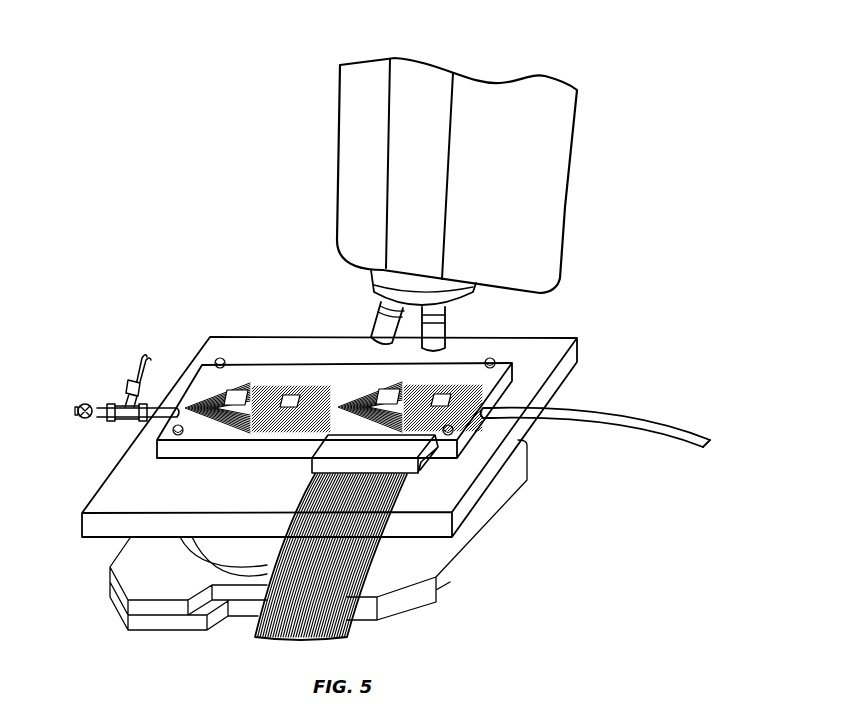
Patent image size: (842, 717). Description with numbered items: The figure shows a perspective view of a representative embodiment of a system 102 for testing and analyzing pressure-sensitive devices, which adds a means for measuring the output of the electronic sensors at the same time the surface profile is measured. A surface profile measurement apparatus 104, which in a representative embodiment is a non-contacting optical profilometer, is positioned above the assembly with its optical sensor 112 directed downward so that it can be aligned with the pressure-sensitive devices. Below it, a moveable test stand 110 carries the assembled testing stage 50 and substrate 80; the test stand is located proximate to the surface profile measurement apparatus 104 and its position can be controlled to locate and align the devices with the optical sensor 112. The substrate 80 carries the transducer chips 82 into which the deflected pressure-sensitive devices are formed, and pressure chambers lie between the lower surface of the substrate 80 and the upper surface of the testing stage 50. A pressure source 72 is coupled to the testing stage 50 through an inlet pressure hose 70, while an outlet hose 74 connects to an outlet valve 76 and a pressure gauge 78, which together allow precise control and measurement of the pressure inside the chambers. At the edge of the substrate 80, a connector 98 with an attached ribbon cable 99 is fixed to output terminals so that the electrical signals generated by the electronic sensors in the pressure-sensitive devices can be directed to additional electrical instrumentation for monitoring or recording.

The testing stage 50 is at (188, 450).
The inlet pressure hose 70 is at (613, 429).
The pressure source 72 is at (709, 448).
The outlet hose 74 is at (105, 393).
The outlet valve 76 is at (88, 403).
The pressure gauge 78 is at (130, 382).
The substrate 80 is at (334, 349).
The transducer chips 82 is at (243, 388).
The connector 98 is at (415, 473).
The ribbon cable 99 is at (258, 627).
The system for testing and analysis of pressure-sensitive devices 102 is at (557, 185).
The surface profile measurement apparatus 104 is at (540, 176).
The moveable test stand 110 is at (447, 487).
The optical sensor 112 is at (450, 327).